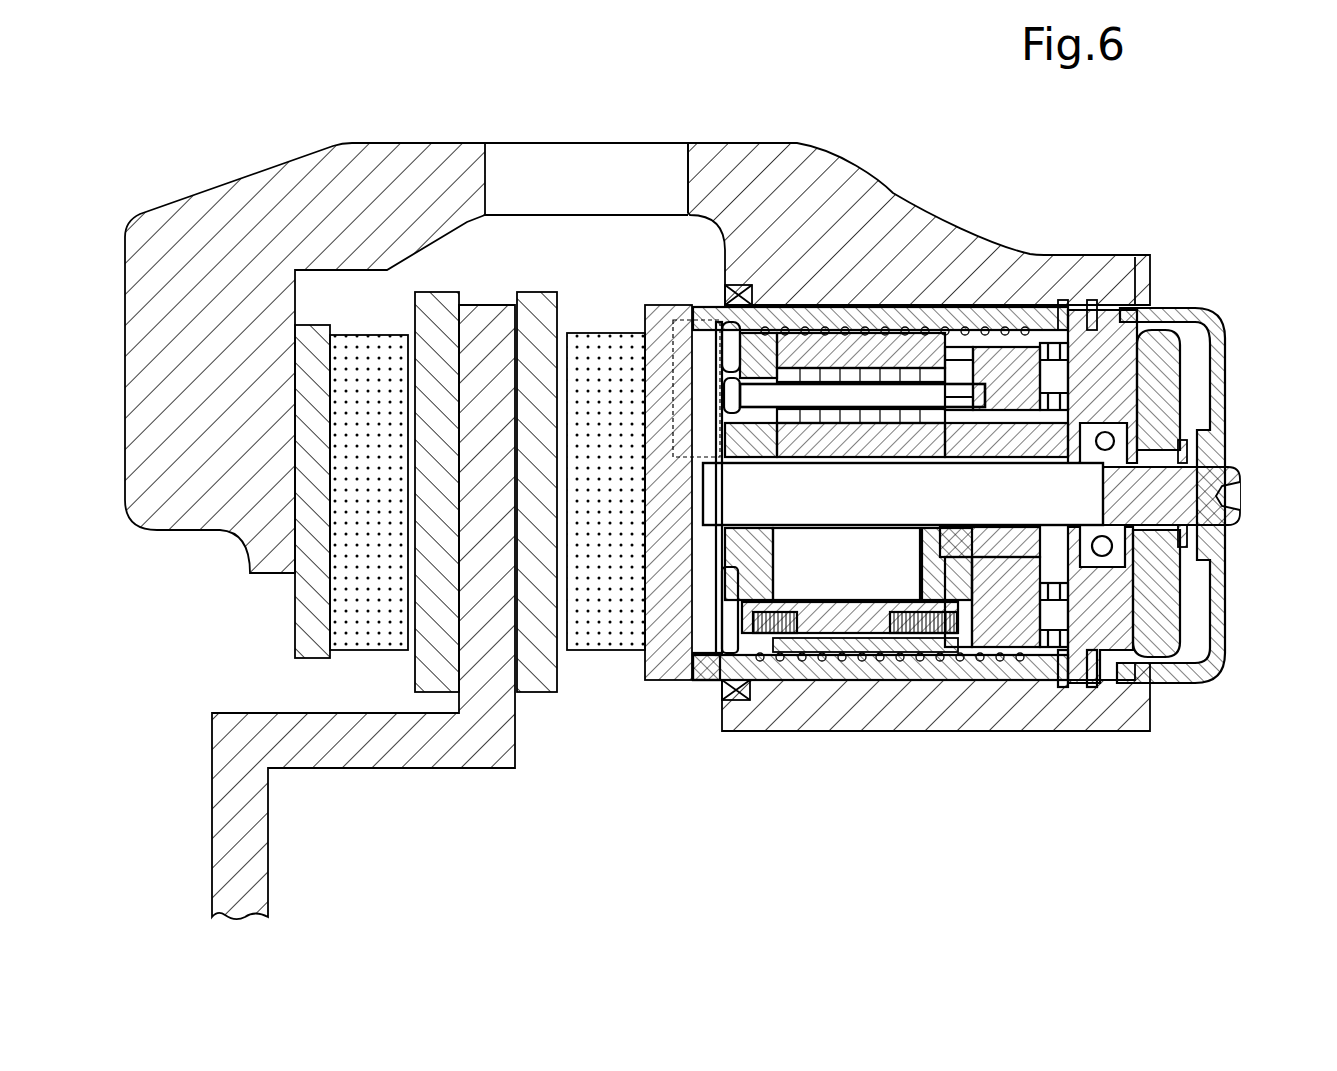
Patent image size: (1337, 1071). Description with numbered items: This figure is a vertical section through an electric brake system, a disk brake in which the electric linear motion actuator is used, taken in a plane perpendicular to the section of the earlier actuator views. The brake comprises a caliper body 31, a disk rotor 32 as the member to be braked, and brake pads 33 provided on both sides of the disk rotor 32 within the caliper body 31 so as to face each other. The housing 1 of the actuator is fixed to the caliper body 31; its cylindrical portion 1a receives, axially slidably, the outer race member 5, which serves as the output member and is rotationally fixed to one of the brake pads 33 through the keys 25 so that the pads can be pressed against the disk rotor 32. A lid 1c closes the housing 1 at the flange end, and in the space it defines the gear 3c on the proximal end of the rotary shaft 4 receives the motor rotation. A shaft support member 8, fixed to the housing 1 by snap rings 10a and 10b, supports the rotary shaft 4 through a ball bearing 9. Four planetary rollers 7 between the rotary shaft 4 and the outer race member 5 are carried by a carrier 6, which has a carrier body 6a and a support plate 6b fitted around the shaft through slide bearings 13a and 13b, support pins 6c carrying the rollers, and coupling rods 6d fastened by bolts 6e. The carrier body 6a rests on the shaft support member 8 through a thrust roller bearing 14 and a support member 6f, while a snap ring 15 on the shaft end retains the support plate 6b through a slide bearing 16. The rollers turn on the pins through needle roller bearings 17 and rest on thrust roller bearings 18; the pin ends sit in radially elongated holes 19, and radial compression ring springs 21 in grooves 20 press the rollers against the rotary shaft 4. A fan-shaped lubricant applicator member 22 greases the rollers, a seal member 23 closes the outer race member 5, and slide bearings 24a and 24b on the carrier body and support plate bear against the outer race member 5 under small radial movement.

The housing 1 is at (1133, 248).
The cylindrical portion 1a is at (760, 715).
The lid 1c is at (1211, 469).
The gear 3c is at (1182, 605).
The rotary shaft 4 is at (1232, 515).
The outer race member 5 is at (799, 299).
The carrier 6 is at (892, 462).
The carrier body 6a is at (935, 665).
The support plate 6b is at (730, 690).
The support pins 6c is at (845, 330).
The coupling rods 6d is at (820, 612).
The bolts 6e is at (888, 630).
The support member 6f is at (1050, 665).
The planetary rollers 7 is at (835, 305).
The shaft support member 8 is at (1150, 405).
The ball bearing 9 is at (1190, 451).
The snap ring 10a is at (1093, 330).
The snap ring 10b is at (1063, 330).
The slide bearing 13a is at (930, 520).
The slide bearing 13b is at (708, 525).
The thrust roller bearing 14 is at (1185, 375).
The snap ring 15 is at (660, 545).
The slide bearing 16 is at (712, 605).
The needle roller bearings 17 is at (870, 413).
The thrust roller bearings 18 is at (905, 350).
The radially elongated holes 19 is at (742, 332).
The grooves 20 is at (705, 340).
The radial compression ring springs 21 is at (720, 345).
The lubricant applicator member 22 is at (790, 645).
The seal member 23 is at (698, 560).
The slide bearing 24a is at (932, 340).
The slide bearing 24b is at (768, 345).
The keys 25 is at (682, 303).
The caliper body 31 is at (418, 185).
The disk rotor 32 is at (490, 330).
The brake pads 33 is at (372, 355).